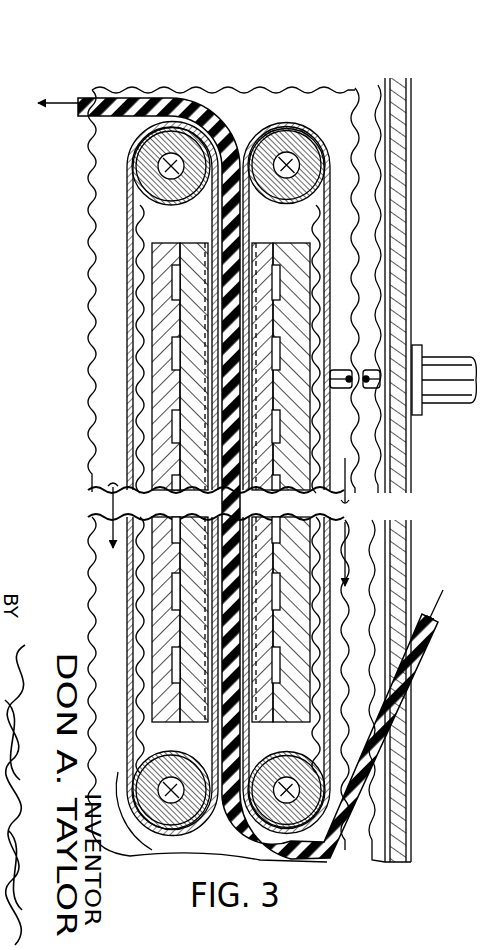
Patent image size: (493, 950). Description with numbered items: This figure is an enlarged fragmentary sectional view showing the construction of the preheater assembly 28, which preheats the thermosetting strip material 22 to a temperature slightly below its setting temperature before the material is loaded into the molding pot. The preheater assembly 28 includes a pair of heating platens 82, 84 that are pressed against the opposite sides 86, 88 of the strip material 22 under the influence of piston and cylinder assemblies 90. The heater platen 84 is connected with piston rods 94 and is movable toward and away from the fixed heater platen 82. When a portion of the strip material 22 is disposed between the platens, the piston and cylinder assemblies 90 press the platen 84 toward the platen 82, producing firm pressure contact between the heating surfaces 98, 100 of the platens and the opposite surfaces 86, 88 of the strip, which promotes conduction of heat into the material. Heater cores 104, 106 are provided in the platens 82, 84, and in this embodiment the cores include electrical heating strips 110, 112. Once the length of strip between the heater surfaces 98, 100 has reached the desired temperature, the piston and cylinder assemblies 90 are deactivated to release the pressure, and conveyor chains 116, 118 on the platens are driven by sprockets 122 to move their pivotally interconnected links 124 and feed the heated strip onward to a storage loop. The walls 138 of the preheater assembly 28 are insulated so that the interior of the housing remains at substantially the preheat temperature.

The thermosetting strip material 22 is at (356, 717).
The preheater assembly 28 is at (422, 137).
The heating platen 82 is at (125, 346).
The heating platen 84 is at (249, 297).
The side of the strip material 86 is at (200, 491).
The side of the strip material 88 is at (253, 467).
The piston and cylinder assemblies 90 is at (472, 343).
The piston rods 94 is at (368, 390).
The heating surface 98 is at (214, 385).
The heating surface 100 is at (239, 331).
The heater core 104 is at (138, 538).
The heater core 106 is at (307, 257).
The electrical heating strip 110 is at (172, 284).
The electrical heating strip 112 is at (282, 312).
The conveyor chain 116 is at (125, 241).
The conveyor chain 118 is at (335, 185).
The sprockets 122 is at (146, 212).
The links 124 is at (137, 133).
The walls 138 is at (398, 159).